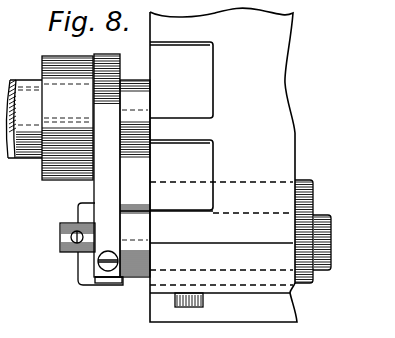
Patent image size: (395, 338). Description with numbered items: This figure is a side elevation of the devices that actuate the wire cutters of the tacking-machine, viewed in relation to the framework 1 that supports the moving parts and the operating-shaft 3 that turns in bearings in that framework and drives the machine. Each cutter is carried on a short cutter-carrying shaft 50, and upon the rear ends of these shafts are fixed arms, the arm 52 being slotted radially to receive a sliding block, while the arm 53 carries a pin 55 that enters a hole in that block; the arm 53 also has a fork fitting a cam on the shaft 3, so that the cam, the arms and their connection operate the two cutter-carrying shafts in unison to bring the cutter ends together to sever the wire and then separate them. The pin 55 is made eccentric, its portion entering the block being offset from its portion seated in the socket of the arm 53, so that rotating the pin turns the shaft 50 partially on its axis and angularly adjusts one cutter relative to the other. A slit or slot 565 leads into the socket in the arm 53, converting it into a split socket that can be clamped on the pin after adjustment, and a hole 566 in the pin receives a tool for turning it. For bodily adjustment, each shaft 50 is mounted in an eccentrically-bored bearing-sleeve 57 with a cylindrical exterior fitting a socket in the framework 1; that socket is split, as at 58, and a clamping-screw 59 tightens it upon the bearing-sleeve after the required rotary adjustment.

The framework 1 is at (208, 165).
The operating-shaft 3 is at (28, 160).
The cutter-carrying shaft 50 is at (322, 210).
The arm 52 is at (137, 198).
The arm 53 is at (107, 165).
The pin 55 is at (58, 249).
The bearing-sleeve 57 is at (304, 288).
The split 58 is at (228, 244).
The clamping-screw 59 is at (204, 305).
The slit or slot 565 is at (116, 281).
The hole 566 is at (73, 232).